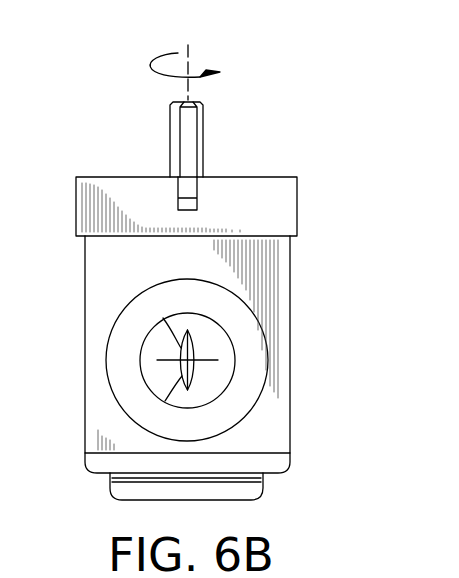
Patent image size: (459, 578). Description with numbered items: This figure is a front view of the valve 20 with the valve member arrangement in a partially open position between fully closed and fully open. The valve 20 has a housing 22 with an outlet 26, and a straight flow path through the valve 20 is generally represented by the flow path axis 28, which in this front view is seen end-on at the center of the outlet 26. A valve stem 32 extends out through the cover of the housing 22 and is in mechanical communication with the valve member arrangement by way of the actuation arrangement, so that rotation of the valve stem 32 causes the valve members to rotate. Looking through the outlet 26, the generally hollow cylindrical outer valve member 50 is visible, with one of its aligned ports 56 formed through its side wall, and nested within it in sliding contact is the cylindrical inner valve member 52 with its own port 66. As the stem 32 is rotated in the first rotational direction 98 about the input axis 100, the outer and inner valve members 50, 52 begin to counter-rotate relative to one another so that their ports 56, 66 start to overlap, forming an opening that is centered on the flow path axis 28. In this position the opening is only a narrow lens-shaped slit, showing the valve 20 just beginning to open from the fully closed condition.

The valve 20 is at (323, 118).
The housing 22 is at (297, 203).
The outlet 26 is at (247, 305).
The flow path axis 28 is at (197, 372).
The valve stem 32 is at (190, 140).
The outer valve member 50 is at (205, 388).
The inner valve member 52 is at (157, 350).
The port 56 is at (193, 352).
The port 66 is at (168, 372).
The first rotational direction 98 is at (158, 74).
The input axis 100 is at (190, 52).